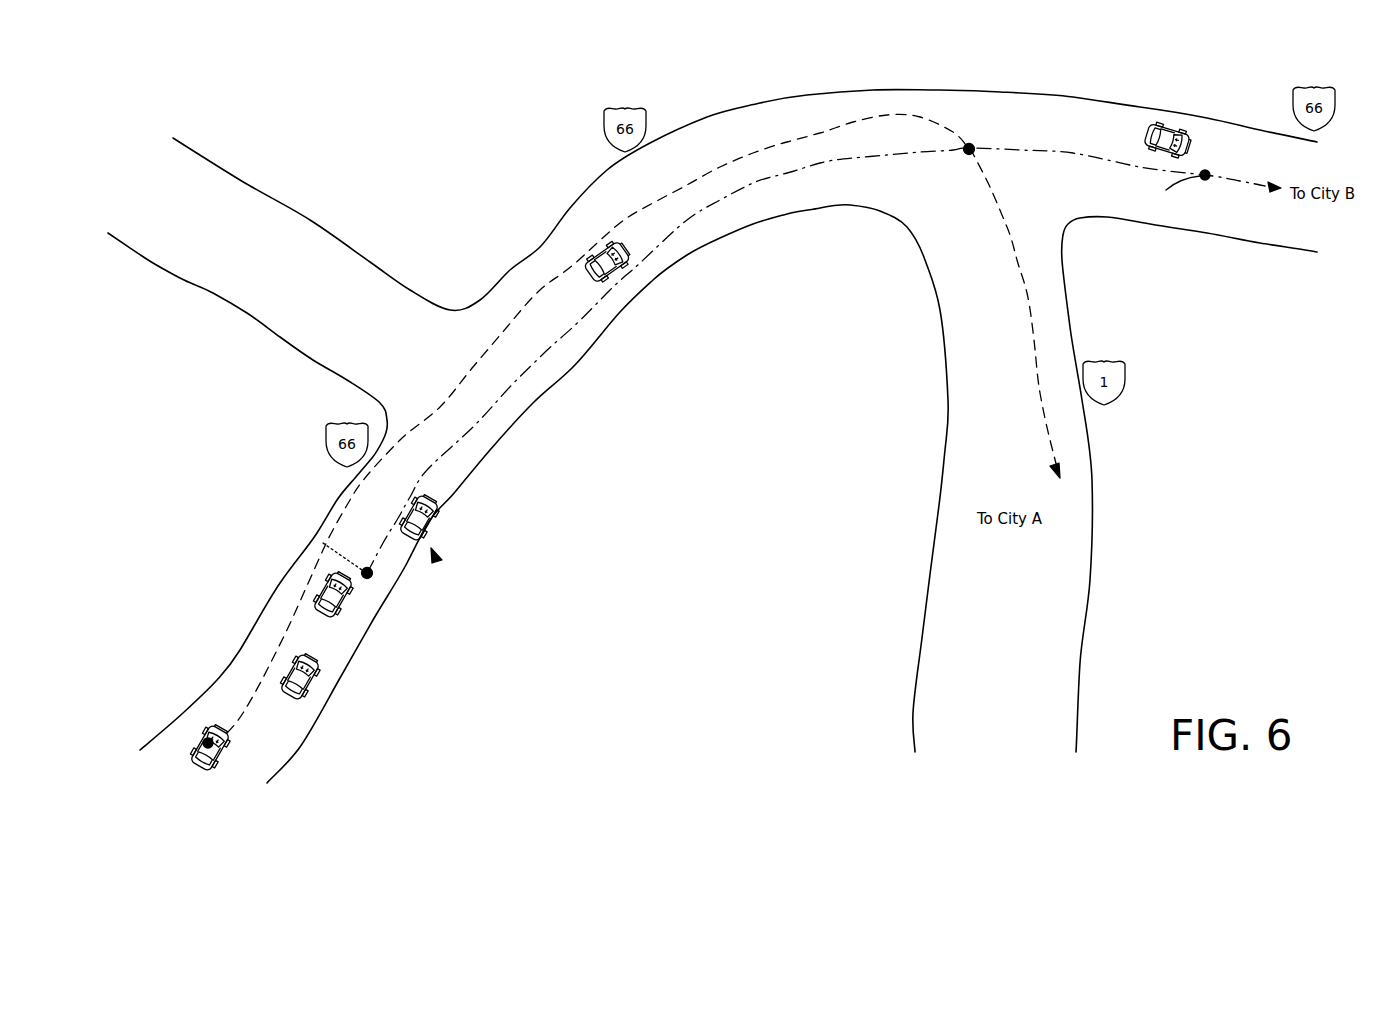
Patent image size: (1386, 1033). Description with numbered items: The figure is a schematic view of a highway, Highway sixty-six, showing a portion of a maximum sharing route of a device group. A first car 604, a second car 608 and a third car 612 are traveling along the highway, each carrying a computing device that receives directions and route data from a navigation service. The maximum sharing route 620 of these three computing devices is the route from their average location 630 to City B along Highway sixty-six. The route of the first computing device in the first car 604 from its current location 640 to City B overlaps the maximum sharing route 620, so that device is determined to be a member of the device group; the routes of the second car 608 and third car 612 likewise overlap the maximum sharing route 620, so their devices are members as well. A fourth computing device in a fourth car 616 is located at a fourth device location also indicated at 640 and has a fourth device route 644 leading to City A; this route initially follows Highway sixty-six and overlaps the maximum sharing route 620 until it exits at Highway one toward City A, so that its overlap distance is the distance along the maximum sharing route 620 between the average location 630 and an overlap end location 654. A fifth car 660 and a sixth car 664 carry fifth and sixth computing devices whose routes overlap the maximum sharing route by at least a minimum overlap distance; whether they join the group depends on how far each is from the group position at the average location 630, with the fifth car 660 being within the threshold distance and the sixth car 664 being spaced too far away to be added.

The first car 604 is at (440, 507).
The second car 608 is at (320, 596).
The third car 612 is at (318, 683).
The fourth car 616 is at (195, 762).
The maximum sharing route 620 is at (562, 341).
The average location 630 is at (373, 576).
The current location 640 is at (438, 558).
The fourth device route 644 is at (625, 222).
The overlap end location 654 is at (973, 144).
The fifth car 660 is at (607, 250).
The sixth car 664 is at (1170, 127).